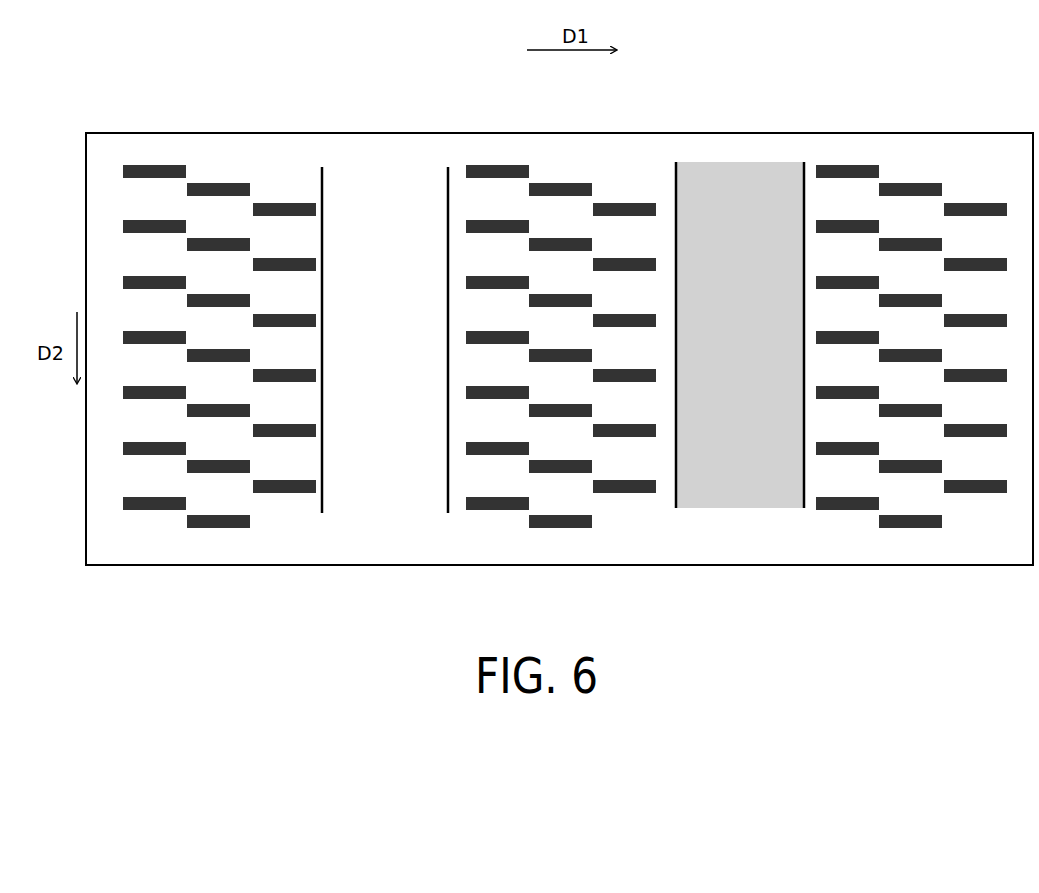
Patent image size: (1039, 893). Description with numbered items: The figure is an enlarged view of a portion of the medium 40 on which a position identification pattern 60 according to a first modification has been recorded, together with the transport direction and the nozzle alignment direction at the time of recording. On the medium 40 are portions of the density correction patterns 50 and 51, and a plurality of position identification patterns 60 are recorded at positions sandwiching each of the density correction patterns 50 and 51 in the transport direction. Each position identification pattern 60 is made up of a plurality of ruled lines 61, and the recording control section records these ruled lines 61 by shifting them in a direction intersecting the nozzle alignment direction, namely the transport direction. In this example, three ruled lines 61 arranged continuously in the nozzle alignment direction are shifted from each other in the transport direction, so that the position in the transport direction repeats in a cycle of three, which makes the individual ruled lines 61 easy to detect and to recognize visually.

The medium 40 is at (638, 565).
The density correction pattern 50 is at (385, 301).
The density correction pattern 51 is at (740, 297).
The position identification pattern 60 is at (552, 306).
The ruled line 61 is at (121, 179).